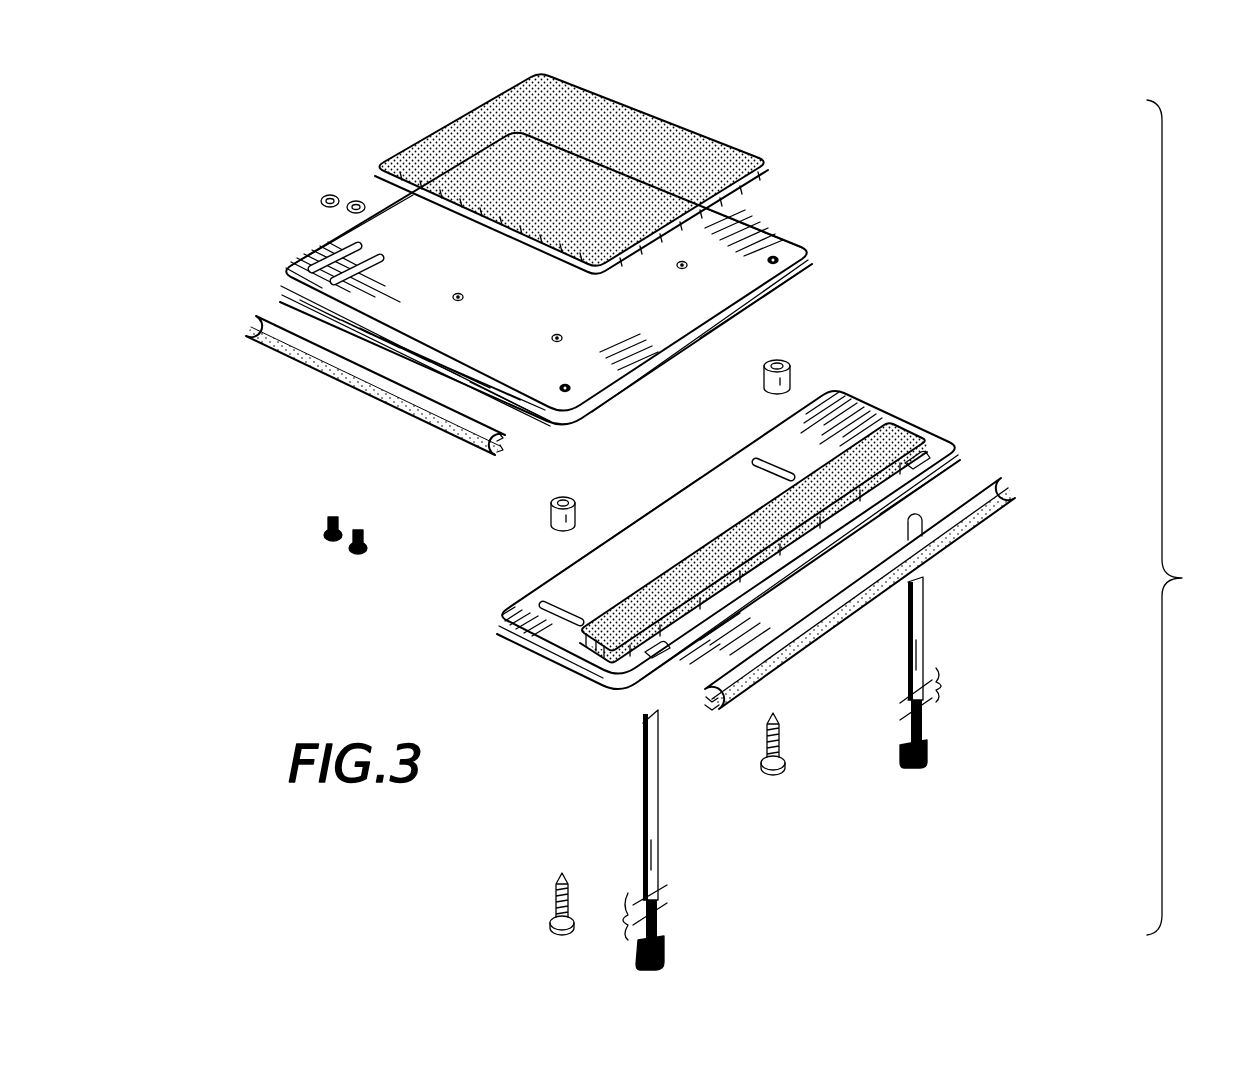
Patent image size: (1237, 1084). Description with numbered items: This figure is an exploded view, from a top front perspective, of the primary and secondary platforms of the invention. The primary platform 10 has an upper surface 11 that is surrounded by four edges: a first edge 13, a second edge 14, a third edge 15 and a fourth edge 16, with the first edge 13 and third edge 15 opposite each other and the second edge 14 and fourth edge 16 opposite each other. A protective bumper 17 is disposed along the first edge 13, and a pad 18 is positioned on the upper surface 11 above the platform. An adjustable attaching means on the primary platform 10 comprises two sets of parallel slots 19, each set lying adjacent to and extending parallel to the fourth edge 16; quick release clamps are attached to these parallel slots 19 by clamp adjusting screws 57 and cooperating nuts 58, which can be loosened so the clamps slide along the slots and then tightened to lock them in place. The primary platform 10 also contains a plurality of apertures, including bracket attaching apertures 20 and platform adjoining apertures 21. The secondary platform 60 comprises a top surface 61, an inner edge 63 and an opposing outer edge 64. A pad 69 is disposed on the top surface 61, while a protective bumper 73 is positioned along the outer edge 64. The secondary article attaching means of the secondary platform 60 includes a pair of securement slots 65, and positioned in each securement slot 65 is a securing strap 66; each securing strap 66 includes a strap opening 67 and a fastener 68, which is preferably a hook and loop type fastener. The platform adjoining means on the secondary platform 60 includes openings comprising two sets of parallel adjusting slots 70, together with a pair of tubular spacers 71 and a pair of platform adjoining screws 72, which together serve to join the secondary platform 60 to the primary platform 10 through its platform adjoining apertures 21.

The primary platform 10 is at (777, 235).
The upper surface 11 is at (671, 335).
The first edge 13 is at (518, 418).
The second edge 14 is at (790, 303).
The third edge 15 is at (750, 223).
The fourth edge 16 is at (402, 202).
The protective bumper 17 is at (340, 387).
The pad 18 is at (576, 183).
The parallel slots 19 is at (384, 257).
The bracket attaching apertures 20 is at (678, 267).
The platform adjoining apertures 21 is at (778, 259).
The clamp adjusting screws 57 is at (355, 553).
The cooperating nuts 58 is at (348, 211).
The secondary platform 60 is at (897, 413).
The top surface 61 is at (688, 536).
The inner edge 63 is at (707, 470).
The outer edge 64 is at (953, 475).
The securement slots 65 is at (922, 457).
The securing strap 66 is at (922, 715).
The strap opening 67 is at (927, 750).
The fastener 68 is at (925, 615).
The pad 69 is at (733, 570).
The adjusting slots 70 is at (757, 460).
The tubular spacers 71 is at (790, 360).
The platform adjoining screws 72 is at (558, 880).
The protective bumper 73 is at (1018, 496).